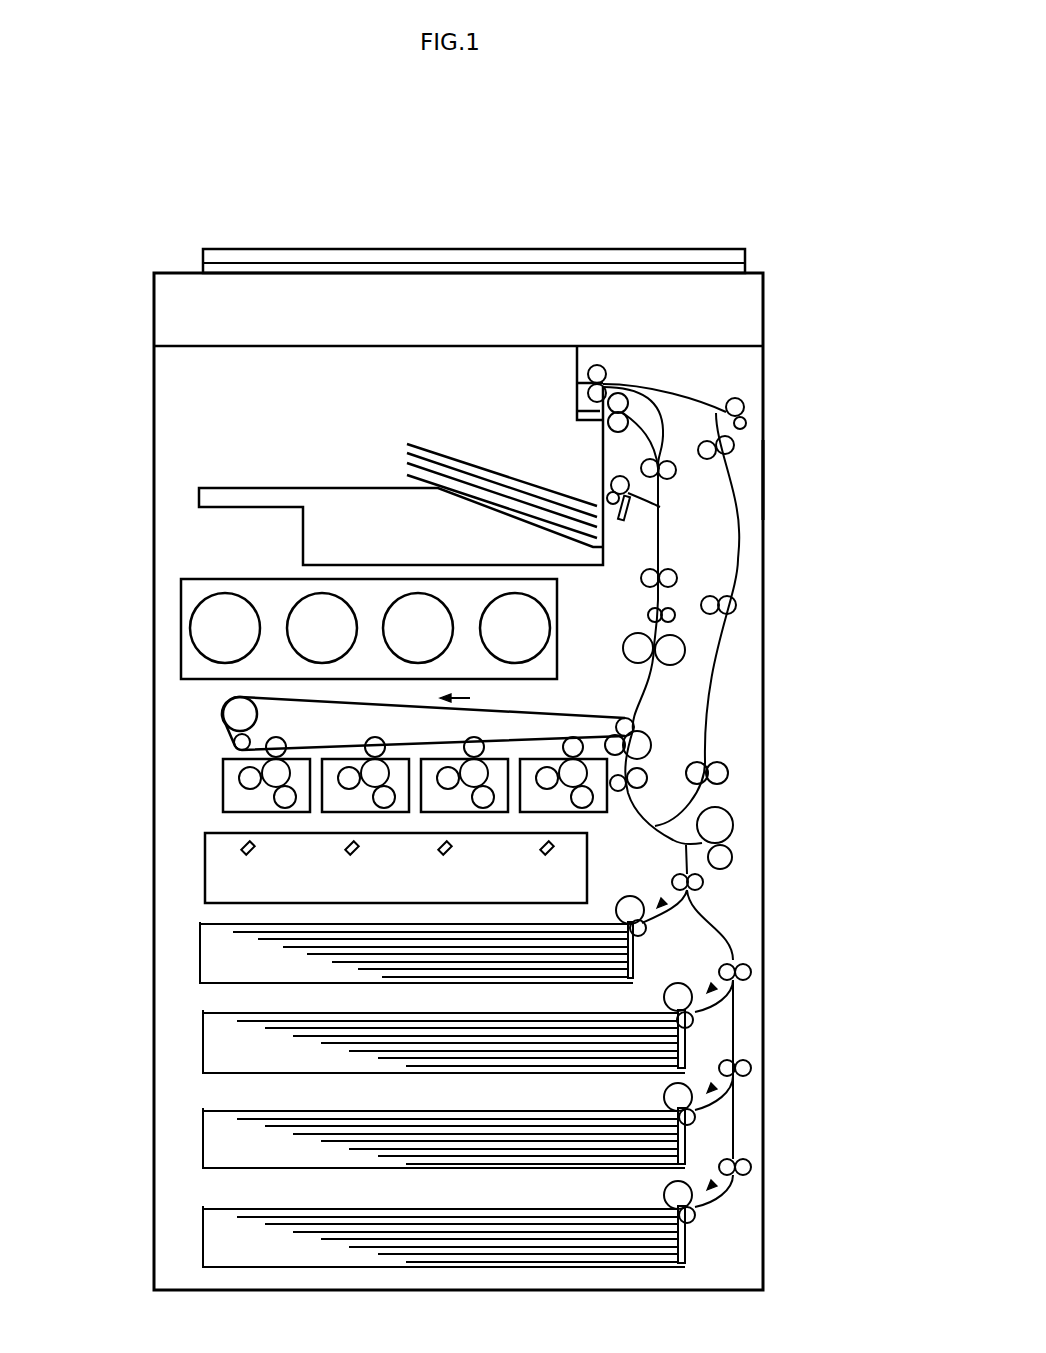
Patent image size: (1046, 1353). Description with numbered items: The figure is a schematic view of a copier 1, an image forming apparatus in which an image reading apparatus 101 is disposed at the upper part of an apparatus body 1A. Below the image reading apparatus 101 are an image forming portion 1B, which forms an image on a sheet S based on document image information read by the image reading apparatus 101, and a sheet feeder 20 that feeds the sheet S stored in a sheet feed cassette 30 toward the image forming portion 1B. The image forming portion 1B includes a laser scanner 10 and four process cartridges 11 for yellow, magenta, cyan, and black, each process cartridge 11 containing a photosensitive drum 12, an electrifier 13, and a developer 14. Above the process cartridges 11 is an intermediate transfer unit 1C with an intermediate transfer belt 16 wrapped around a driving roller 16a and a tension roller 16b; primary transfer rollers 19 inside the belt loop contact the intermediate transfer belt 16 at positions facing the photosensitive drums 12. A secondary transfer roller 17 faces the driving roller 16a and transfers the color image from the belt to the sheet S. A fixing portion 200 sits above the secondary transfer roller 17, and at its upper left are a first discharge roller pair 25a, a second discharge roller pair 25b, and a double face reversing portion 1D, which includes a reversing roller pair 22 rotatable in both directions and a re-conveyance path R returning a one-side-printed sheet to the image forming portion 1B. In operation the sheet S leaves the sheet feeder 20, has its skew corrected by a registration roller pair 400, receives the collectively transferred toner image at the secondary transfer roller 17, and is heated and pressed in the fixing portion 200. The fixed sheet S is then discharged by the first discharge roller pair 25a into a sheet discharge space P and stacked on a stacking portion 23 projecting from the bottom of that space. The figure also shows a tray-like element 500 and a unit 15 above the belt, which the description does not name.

The copier 1 is at (790, 238).
The image reading apparatus 101 is at (152, 300).
The sheet discharge space P is at (192, 393).
The sheet discharge tray 500 is at (205, 492).
The stacking portion 23 is at (340, 490).
The reversing roller pair 22 is at (600, 372).
The second discharge roller pair 25b is at (622, 398).
The first discharge roller pair 25a is at (615, 480).
The double face reversing portion 1D is at (723, 387).
The apparatus body 1A is at (763, 477).
The re-conveyance path R is at (763, 560).
The fixing portion 200 is at (685, 648).
The toner bottle unit 15 is at (195, 632).
The intermediate transfer unit 1C is at (566, 707).
The intermediate transfer belt 16 is at (587, 717).
The driving roller 16a is at (634, 730).
The tension roller 16b is at (237, 717).
The secondary transfer roller 17 is at (650, 745).
The registration roller pair 400 is at (647, 780).
The image forming portion 1B is at (212, 743).
The process cartridge 11 is at (222, 790).
The photosensitive drum 12 is at (285, 770).
The developer 14 is at (238, 777).
The electrifier 13 is at (276, 803).
The primary transfer roller 19 is at (470, 746).
The laser scanner 10 is at (203, 870).
The sheet feeder 20 is at (712, 862).
The sheet S is at (588, 922).
The sheet feed cassette 30 is at (190, 960).